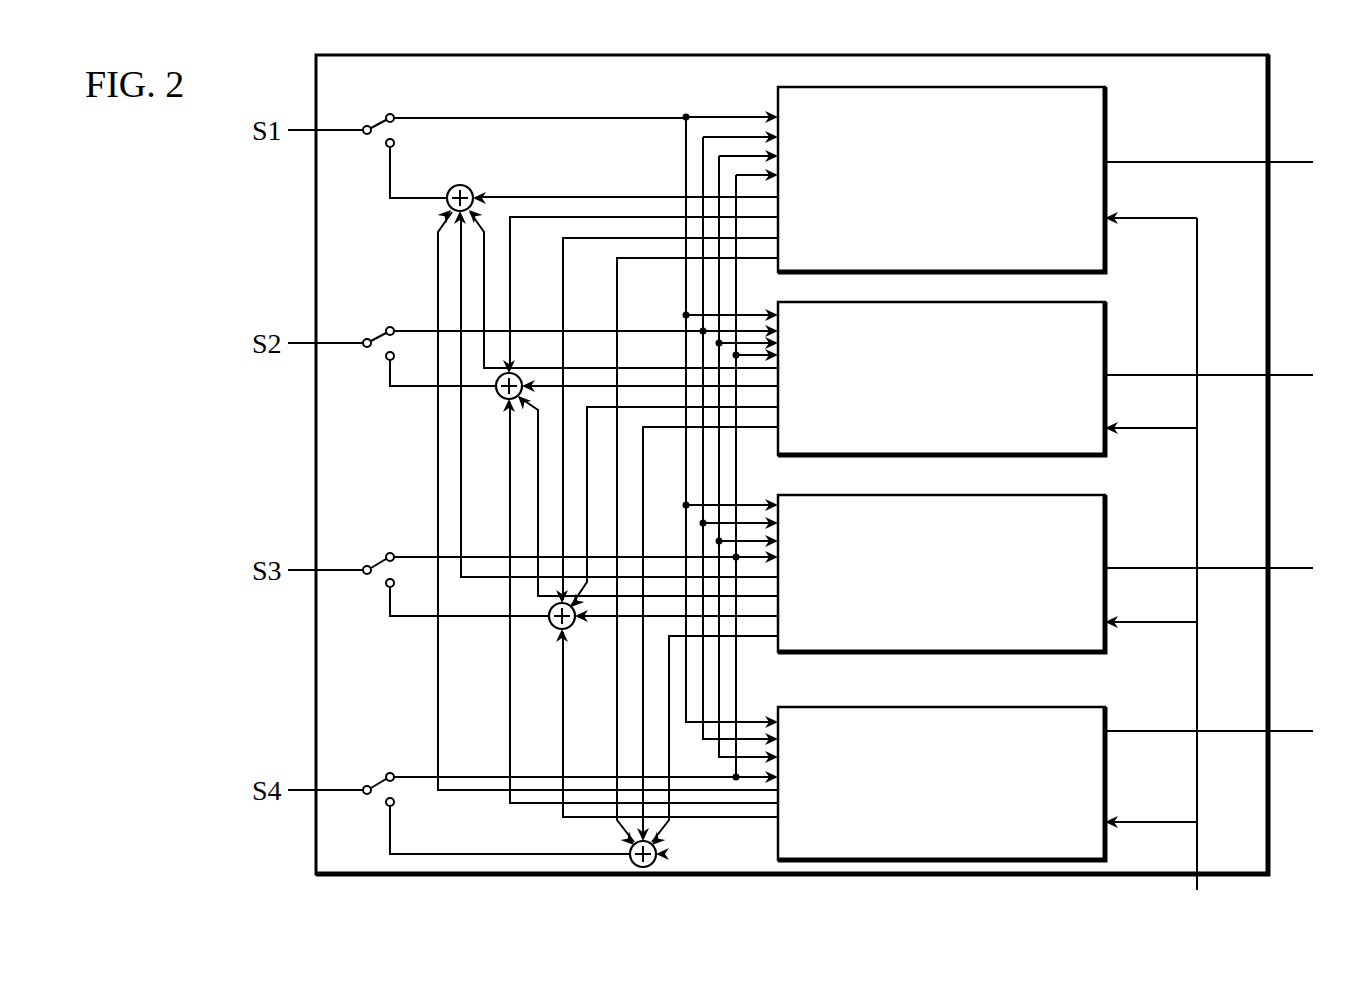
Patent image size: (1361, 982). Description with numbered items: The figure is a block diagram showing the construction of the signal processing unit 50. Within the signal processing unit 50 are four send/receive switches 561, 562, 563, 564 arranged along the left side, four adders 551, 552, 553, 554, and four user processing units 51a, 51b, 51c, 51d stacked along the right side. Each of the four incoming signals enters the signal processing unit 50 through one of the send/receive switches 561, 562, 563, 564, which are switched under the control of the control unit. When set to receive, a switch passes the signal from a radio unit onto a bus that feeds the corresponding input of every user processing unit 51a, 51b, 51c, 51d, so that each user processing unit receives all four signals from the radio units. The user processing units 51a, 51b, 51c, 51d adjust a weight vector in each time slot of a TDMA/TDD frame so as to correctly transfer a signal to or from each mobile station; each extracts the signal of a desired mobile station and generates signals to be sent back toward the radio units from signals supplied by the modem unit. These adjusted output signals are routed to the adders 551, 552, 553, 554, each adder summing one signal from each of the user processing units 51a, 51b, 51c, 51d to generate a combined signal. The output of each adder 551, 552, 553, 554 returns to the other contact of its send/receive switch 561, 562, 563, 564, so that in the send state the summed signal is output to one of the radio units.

The signal processing unit 50 is at (792, 464).
The user processing unit 51a is at (990, 86).
The user processing unit 51b is at (993, 301).
The user processing unit 51c is at (993, 493).
The user processing unit 51d is at (993, 705).
The adder 551 is at (470, 189).
The adder 552 is at (503, 400).
The adder 553 is at (556, 632).
The adder 554 is at (658, 850).
The send/receive switch 561 is at (378, 148).
The send/receive switch 562 is at (396, 312).
The send/receive switch 563 is at (396, 538).
The send/receive switch 564 is at (396, 758).